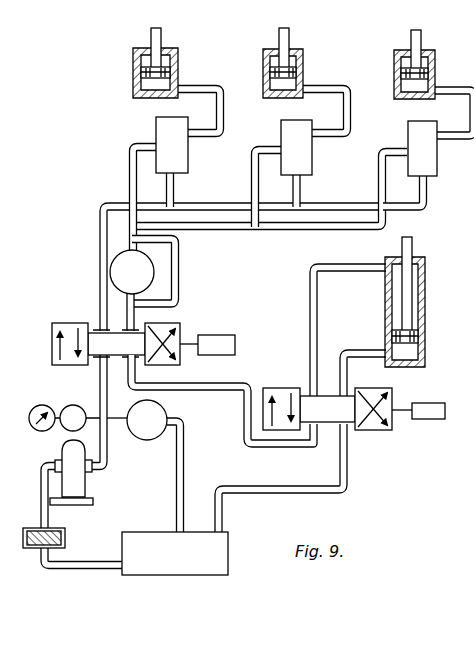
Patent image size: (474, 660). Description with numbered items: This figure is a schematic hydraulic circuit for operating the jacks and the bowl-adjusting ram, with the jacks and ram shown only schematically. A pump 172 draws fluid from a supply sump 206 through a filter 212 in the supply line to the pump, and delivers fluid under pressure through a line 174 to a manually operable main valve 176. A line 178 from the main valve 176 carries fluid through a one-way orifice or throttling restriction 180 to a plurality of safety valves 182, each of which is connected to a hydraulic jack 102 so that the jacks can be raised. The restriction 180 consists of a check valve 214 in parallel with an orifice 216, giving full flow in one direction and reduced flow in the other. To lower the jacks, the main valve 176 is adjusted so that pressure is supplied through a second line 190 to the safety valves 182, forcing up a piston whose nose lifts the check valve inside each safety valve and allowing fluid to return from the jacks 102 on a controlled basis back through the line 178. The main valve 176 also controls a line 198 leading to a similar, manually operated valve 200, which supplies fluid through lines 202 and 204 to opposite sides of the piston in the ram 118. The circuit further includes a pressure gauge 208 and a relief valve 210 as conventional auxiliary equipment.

The hydraulic jack 102 is at (132, 72).
The ram 118 is at (384, 297).
The pump 172 is at (78, 487).
The line 174 is at (99, 379).
The main valve 176 is at (183, 329).
The line 178 is at (136, 318).
The one-way orifice or throttling restriction 180 is at (183, 277).
The safety valve 182 is at (155, 125).
The second line 190 is at (99, 223).
The line 198 is at (231, 383).
The valve 200 is at (378, 432).
The line 202 is at (311, 289).
The line 204 is at (370, 333).
The supply sump 206 is at (163, 512).
The pressure gauge 208 is at (31, 429).
The relief valve 210 is at (167, 412).
The filter 212 is at (65, 537).
The check valve 214 is at (112, 265).
The orifice 216 is at (180, 272).